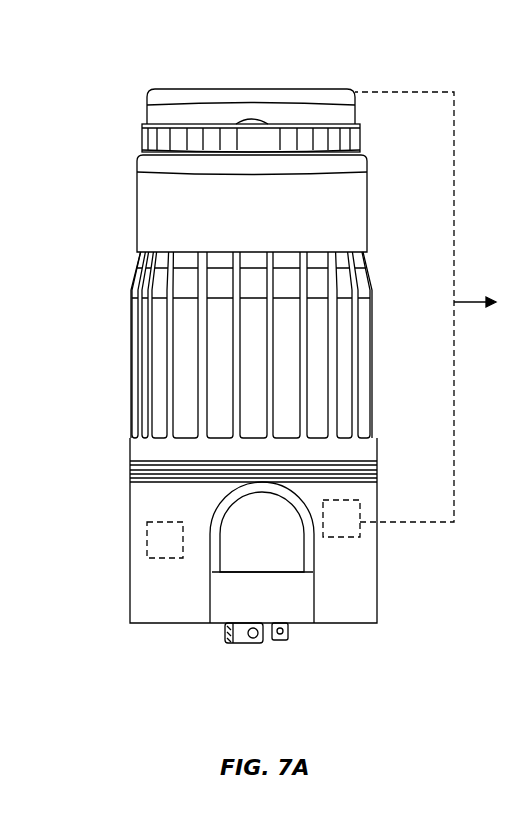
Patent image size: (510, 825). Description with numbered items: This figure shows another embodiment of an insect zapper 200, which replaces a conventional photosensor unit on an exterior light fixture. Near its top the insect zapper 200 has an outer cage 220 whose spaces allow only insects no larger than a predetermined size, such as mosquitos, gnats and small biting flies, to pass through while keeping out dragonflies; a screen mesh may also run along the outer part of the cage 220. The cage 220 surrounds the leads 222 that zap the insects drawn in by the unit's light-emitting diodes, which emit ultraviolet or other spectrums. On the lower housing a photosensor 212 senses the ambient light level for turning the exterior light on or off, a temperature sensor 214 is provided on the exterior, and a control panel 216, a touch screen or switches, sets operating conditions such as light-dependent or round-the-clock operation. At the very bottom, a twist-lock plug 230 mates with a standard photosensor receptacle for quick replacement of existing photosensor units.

The insect zapper 200 is at (130, 32).
The outer cage 220 is at (137, 235).
The leads 222 is at (130, 425).
The temperature sensor 214 is at (147, 548).
The control panel 216 is at (343, 537).
The photosensor 212 is at (283, 545).
The twist-lock plug 230 is at (282, 645).